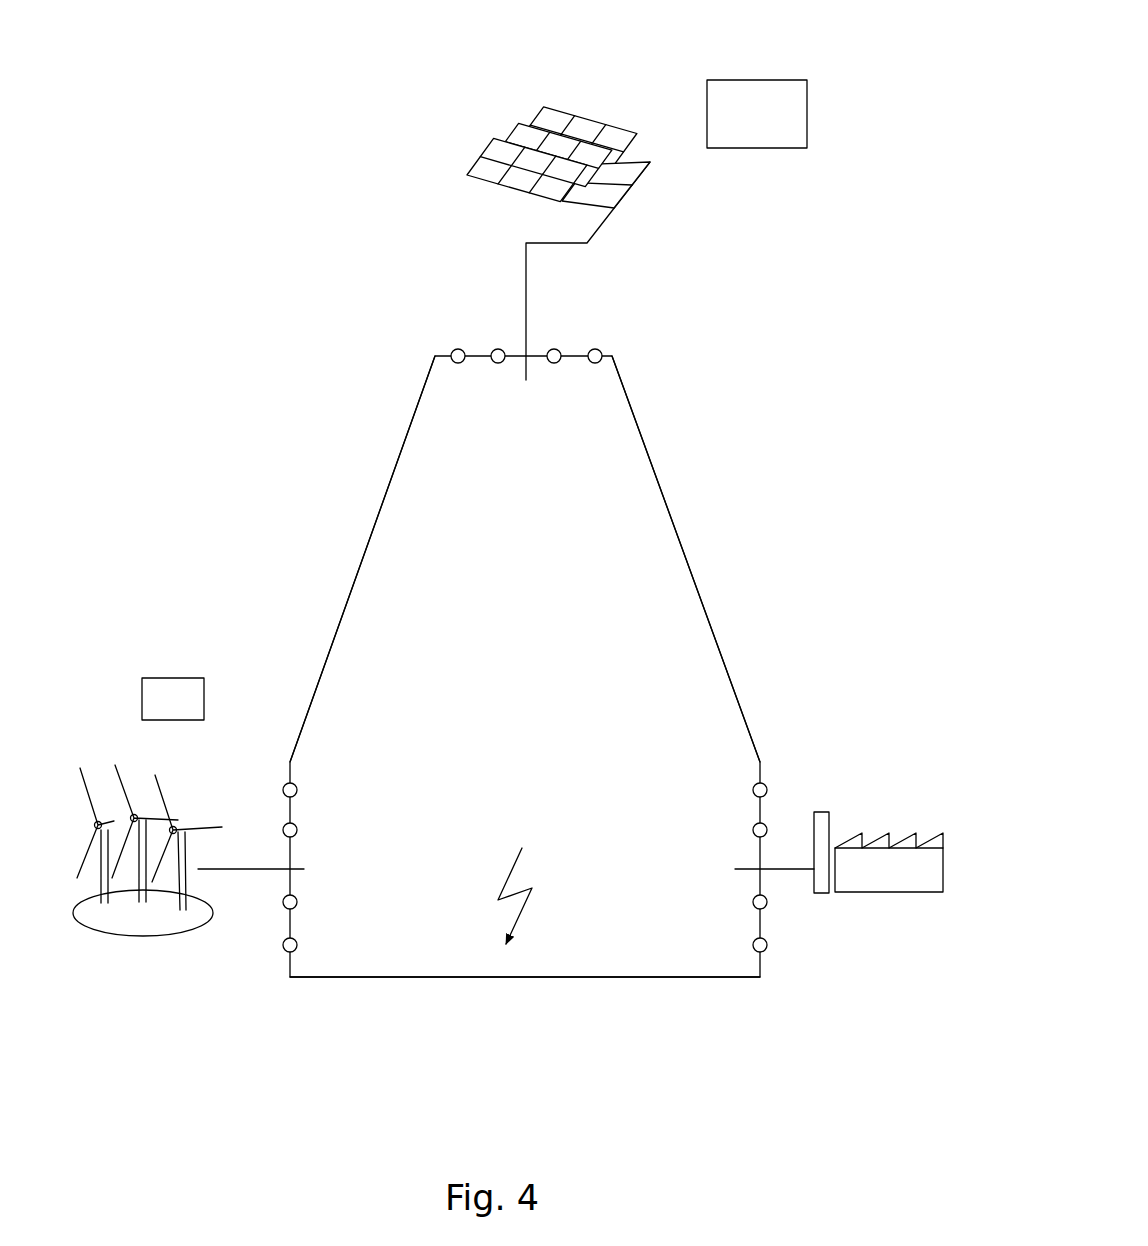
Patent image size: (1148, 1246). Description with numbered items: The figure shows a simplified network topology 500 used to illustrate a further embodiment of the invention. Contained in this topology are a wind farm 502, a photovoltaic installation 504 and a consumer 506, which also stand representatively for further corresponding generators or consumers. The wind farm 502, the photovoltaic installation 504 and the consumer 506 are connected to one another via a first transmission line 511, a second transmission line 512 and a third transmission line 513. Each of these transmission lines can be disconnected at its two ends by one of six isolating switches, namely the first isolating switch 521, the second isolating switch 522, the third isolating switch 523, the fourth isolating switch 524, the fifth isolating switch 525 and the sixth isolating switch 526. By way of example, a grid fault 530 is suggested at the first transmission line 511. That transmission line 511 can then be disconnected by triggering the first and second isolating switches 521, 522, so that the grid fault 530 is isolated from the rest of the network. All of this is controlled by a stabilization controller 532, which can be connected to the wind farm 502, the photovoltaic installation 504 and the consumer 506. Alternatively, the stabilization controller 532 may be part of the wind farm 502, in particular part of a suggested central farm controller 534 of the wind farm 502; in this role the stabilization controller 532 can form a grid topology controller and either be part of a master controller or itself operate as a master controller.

The network topology 500 is at (322, 242).
The wind farm 502 is at (118, 734).
The photovoltaic installation 504 is at (467, 152).
The consumer 506 is at (903, 906).
The first transmission line 511 is at (493, 1004).
The second transmission line 512 is at (364, 516).
The third transmission line 513 is at (714, 527).
The first isolating switch 521 is at (783, 929).
The second isolating switch 522 is at (283, 921).
The third isolating switch 523 is at (283, 808).
The fourth isolating switch 524 is at (478, 348).
The fifth isolating switch 525 is at (578, 348).
The sixth isolating switch 526 is at (748, 812).
The grid fault 530 is at (508, 872).
The stabilization controller 532 is at (750, 78).
The central farm controller 534 is at (167, 688).